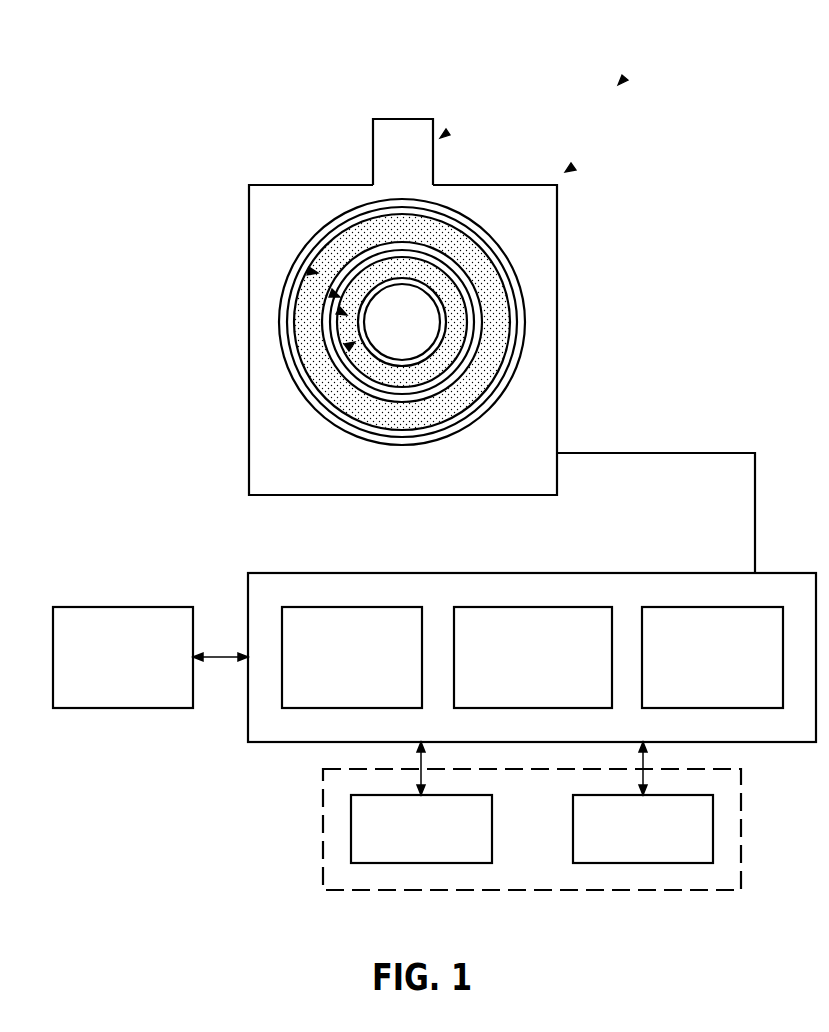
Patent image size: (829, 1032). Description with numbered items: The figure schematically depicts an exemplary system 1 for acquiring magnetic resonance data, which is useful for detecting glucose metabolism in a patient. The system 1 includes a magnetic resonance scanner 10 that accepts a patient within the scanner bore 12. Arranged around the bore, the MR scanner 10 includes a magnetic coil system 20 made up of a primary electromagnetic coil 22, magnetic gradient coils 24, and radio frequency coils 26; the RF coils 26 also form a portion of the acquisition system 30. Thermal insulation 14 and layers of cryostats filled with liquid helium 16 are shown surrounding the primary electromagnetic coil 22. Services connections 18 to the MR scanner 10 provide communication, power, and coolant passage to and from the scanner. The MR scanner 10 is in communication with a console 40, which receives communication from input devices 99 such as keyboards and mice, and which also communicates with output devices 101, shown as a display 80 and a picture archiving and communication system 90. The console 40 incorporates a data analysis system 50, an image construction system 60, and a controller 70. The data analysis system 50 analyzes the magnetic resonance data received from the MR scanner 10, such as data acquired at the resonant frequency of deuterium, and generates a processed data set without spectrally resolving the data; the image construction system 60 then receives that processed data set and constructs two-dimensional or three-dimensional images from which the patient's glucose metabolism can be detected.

The system 1 is at (622, 82).
The magnetic resonance scanner 10 is at (568, 170).
The scanner bore 12 is at (395, 298).
The thermal insulation 14 is at (453, 203).
The cryostats filled with liquid helium 16 is at (510, 250).
The services connections 18 is at (443, 136).
The magnetic coil system 20 is at (345, 314).
The primary electromagnetic coil 22 is at (497, 303).
The magnetic gradient coils 24 is at (472, 327).
The radio frequency coils 26 is at (447, 360).
The acquisition system 30 is at (353, 344).
The console 40 is at (790, 573).
The data analysis system 50 is at (352, 607).
The image construction system 60 is at (532, 607).
The controller 70 is at (713, 607).
The display 80 is at (420, 865).
The picture archiving and communication system 90 is at (641, 865).
The input devices 99 is at (123, 710).
The output devices 101 is at (742, 825).